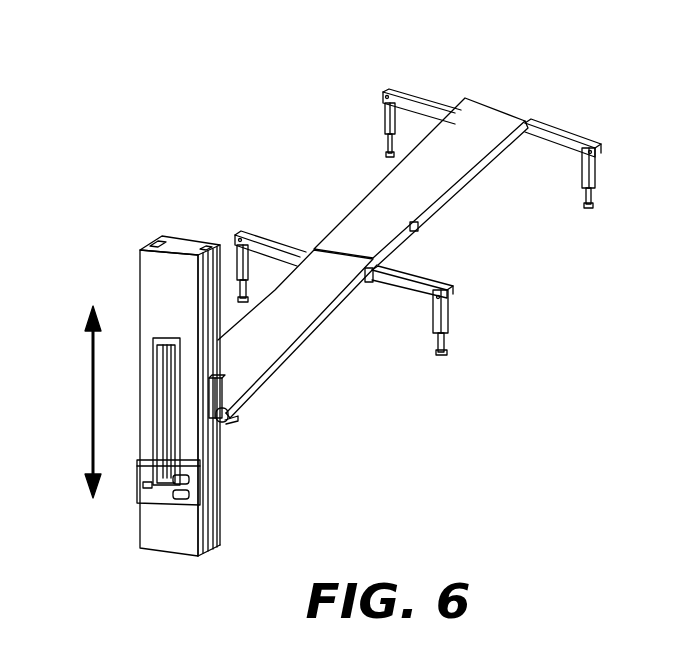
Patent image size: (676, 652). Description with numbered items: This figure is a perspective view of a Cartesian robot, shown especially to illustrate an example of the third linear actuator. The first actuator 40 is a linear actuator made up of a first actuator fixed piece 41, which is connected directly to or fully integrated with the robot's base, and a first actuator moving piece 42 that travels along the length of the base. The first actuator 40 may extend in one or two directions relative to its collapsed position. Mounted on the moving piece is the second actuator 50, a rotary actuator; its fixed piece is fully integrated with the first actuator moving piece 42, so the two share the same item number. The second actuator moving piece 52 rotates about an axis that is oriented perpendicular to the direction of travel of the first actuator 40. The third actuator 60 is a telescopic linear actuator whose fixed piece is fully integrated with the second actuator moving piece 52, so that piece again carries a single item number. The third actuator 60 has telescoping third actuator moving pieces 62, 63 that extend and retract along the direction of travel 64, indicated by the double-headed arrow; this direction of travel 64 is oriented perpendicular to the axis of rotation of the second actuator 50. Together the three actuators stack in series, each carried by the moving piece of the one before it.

The first actuator 40 is at (480, 98).
The first actuator fixed piece 41 is at (480, 119).
The first actuator moving piece 42 is at (297, 289).
The second actuator 50 is at (238, 424).
The second actuator moving piece 52 is at (222, 400).
The third actuator 60 is at (226, 385).
The third actuator moving piece 62 is at (177, 240).
The third actuator moving piece 63 is at (220, 433).
The direction of travel 64 is at (93, 401).